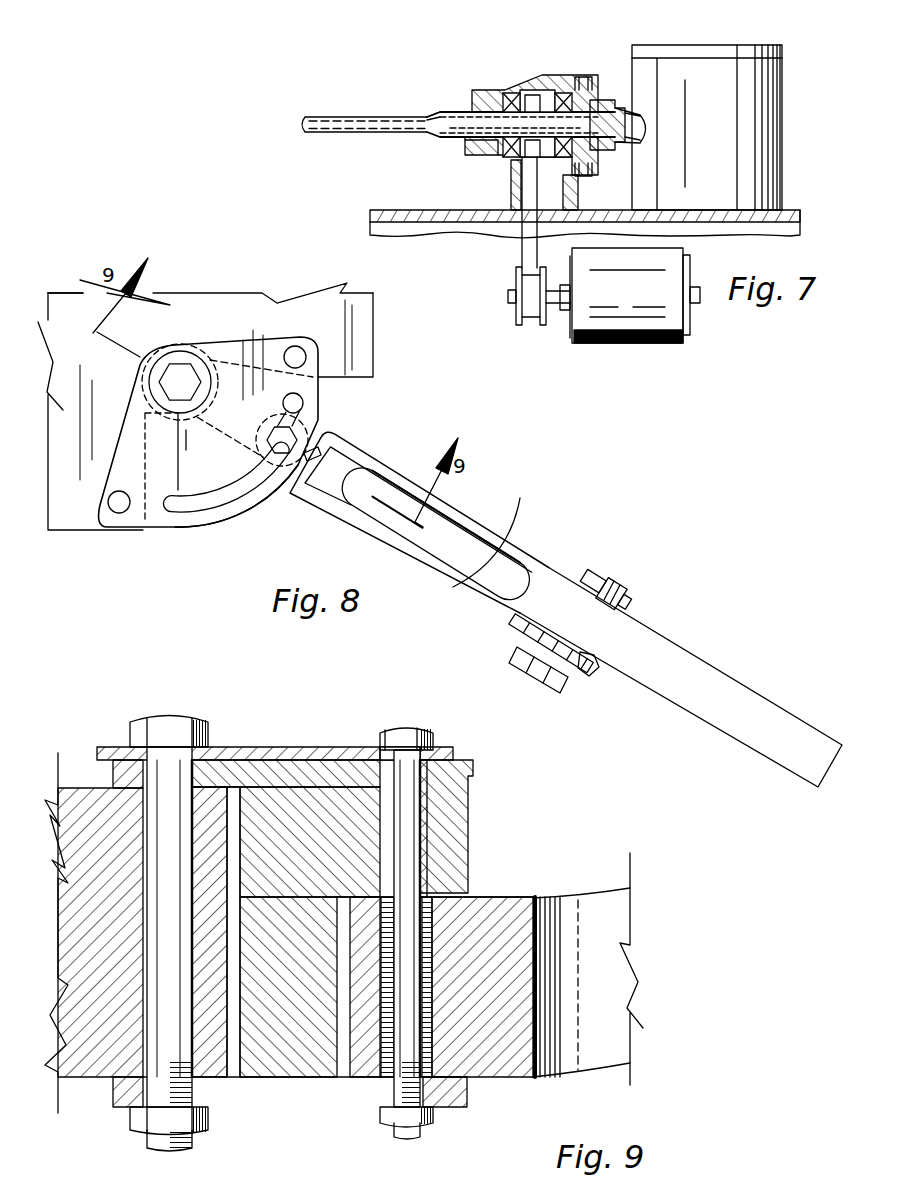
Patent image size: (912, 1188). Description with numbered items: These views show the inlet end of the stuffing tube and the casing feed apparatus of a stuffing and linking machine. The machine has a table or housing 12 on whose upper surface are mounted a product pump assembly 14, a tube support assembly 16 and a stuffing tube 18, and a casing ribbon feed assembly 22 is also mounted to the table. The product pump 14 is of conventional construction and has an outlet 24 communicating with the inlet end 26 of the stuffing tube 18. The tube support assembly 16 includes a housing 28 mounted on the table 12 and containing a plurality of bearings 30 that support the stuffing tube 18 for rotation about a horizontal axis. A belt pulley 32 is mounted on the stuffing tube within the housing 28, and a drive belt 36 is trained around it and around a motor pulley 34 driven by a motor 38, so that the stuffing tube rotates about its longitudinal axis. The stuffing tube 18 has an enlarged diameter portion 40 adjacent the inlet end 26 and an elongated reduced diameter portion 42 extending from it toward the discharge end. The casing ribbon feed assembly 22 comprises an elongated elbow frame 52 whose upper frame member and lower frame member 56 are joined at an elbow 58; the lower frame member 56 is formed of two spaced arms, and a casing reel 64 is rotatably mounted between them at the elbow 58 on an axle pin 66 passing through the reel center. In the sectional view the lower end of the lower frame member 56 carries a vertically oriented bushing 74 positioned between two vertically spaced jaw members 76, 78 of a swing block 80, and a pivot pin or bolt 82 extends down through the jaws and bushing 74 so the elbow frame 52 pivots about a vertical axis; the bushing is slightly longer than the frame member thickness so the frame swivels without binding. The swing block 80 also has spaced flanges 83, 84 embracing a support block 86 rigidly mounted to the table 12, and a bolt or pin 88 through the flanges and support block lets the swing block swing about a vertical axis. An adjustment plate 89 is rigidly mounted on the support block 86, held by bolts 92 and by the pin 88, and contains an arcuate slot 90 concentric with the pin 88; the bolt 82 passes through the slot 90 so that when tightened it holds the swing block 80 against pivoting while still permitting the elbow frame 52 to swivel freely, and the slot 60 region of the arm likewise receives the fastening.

In FIG. 7, the table or housing 12 is at (370, 225).
In FIG. 8, the table or housing 12 is at (176, 276).
In FIG. 9, the table or housing 12 is at (56, 912).
In FIG. 7, the product pump assembly 14 is at (782, 77).
In FIG. 7, the tube support assembly 16 is at (497, 77).
In FIG. 7, the stuffing tube 18 is at (313, 108).
In FIG. 8, the casing ribbon feed assembly 22 is at (566, 609).
In FIG. 7, the outlet 24 is at (622, 100).
In FIG. 7, the inlet end 26 is at (578, 78).
In FIG. 7, the housing 28 is at (465, 155).
In FIG. 7, the bearings 30 is at (560, 166).
In FIG. 7, the belt pulley 32 is at (528, 75).
In FIG. 7, the motor pulley 34 is at (521, 327).
In FIG. 7, the drive belt 36 is at (537, 330).
In FIG. 7, the motor 38 is at (612, 345).
In FIG. 7, the enlarged diameter portion 40 is at (447, 112).
In FIG. 7, the reduced diameter portion 42 is at (378, 116).
In FIG. 8, the elbow frame 52 is at (588, 670).
In FIG. 8, the lower frame member 56 is at (426, 571).
In FIG. 9, the lower frame member 56 is at (543, 893).
In FIG. 8, the elbow 58 is at (530, 633).
In FIG. 8, the slot 60 is at (468, 500).
In FIG. 9, the slot 60 is at (563, 905).
In FIG. 8, the casing reel 64 is at (658, 640).
In FIG. 8, the axle pin 66 is at (523, 653).
In FIG. 9, the bushing 74 is at (455, 1085).
In FIG. 9, the jaw member 76 is at (462, 806).
In FIG. 9, the jaw member 78 is at (507, 1088).
In FIG. 8, the swing block 80 is at (273, 493).
In FIG. 9, the swing block 80 is at (300, 1047).
In FIG. 8, the pivot pin or bolt 82 is at (305, 410).
In FIG. 9, the pivot pin or bolt 82 is at (412, 730).
In FIG. 9, the flange 83 is at (123, 761).
In FIG. 9, the flange 84 is at (117, 1108).
In FIG. 8, the support block 86 is at (141, 382).
In FIG. 9, the support block 86 is at (100, 908).
In FIG. 8, the bolt or pin 88 is at (181, 372).
In FIG. 9, the bolt or pin 88 is at (152, 712).
In FIG. 8, the adjustment plate 89 is at (228, 336).
In FIG. 9, the adjustment plate 89 is at (272, 742).
In FIG. 8, the arcuate slot 90 is at (212, 502).
In FIG. 9, the arcuate slot 90 is at (378, 758).
In FIG. 8, the bolts 92 is at (343, 335).